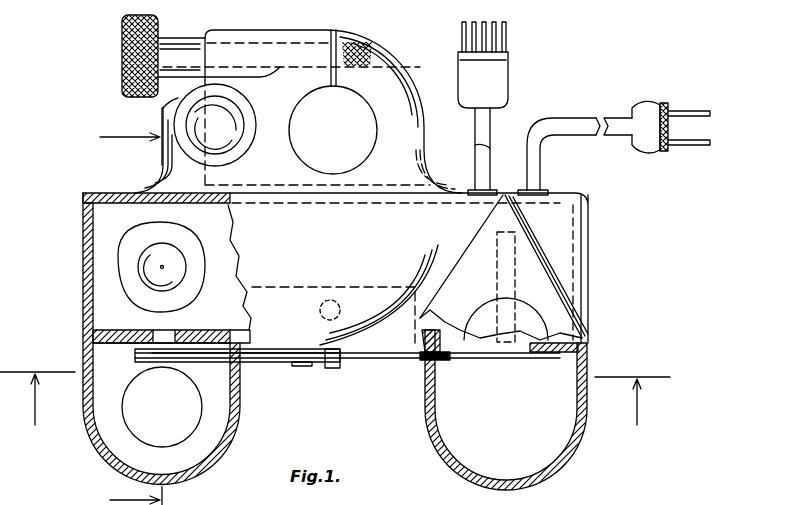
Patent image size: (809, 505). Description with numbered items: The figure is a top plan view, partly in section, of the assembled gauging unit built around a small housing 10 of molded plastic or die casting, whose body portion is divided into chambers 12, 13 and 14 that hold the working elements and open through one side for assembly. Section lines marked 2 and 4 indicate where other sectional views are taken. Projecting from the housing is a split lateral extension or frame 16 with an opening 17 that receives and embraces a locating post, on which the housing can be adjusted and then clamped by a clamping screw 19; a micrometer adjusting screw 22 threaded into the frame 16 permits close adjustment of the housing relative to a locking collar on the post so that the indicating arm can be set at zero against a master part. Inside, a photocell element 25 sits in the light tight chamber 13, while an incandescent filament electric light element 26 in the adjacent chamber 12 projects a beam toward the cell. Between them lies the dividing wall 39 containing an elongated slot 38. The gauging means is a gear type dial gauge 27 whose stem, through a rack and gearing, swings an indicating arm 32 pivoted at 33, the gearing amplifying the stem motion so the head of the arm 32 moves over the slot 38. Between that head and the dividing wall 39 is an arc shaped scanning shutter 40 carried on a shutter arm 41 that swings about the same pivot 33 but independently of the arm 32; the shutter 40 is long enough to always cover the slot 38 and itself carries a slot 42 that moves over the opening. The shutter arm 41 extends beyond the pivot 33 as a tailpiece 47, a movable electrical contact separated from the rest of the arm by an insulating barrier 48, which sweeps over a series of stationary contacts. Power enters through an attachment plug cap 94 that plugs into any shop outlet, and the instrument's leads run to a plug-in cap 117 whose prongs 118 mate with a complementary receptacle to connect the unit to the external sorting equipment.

The housing 10 is at (347, 341).
The chamber 12 is at (105, 408).
The light tight chamber 13 is at (105, 312).
The chamber 14 is at (562, 438).
The split lateral extension or frame 16 is at (398, 72).
The opening 17 is at (352, 115).
The clamping screw 19 is at (122, 78).
The micrometer adjusting screw 22 is at (252, 108).
The photocell element 25 is at (126, 270).
The incandescent filament electric light element 26 is at (158, 438).
The gear type dial gauge 27 is at (384, 361).
The indicating arm 32 is at (266, 364).
The pivot 33 is at (331, 370).
The elongated slot 38 is at (168, 332).
The dividing wall 39 is at (115, 346).
The scanning shutter 40 is at (212, 336).
The shutter arm 41 is at (297, 366).
The slot 42 is at (155, 354).
The tailpiece 47 is at (528, 360).
The insulating barrier 48 is at (420, 364).
The attachment plug cap 94 is at (660, 150).
The plug-in cap 117 is at (507, 92).
The prongs 118 is at (504, 44).
The section line 2- 2 is at (335, 400).
The section line 4- 4 is at (130, 306).